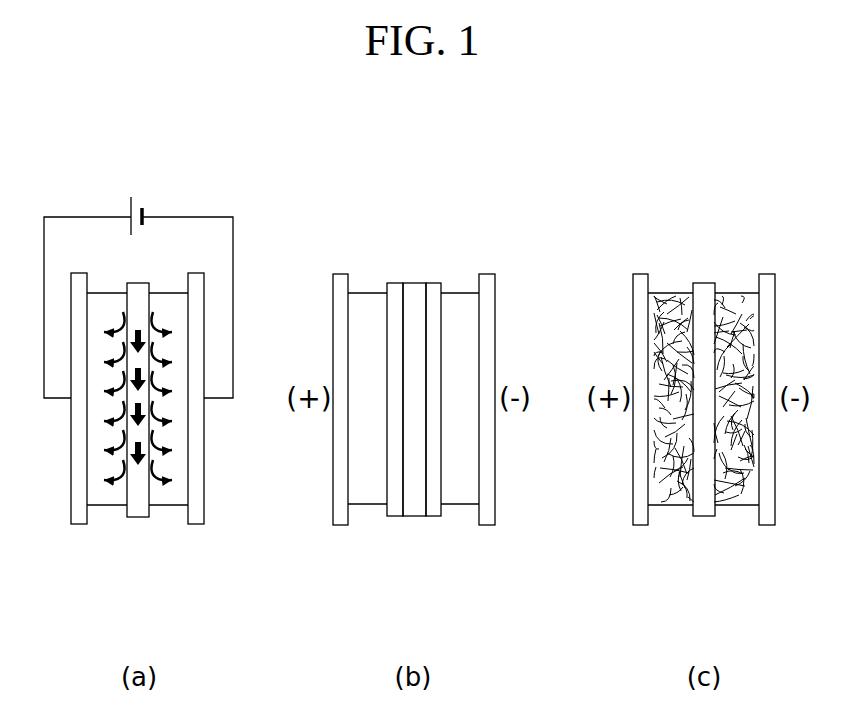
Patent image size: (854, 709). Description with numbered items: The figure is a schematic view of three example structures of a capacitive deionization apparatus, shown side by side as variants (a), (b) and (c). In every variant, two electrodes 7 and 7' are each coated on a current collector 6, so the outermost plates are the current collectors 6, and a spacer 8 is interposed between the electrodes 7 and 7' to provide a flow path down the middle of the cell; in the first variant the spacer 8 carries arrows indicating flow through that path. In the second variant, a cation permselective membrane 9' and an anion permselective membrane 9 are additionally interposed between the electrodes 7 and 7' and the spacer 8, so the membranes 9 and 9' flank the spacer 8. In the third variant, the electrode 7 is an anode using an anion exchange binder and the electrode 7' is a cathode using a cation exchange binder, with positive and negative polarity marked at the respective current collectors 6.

The current collector 6 is at (79, 524).
The electrode 7 is at (390, 446).
The electrode 7' is at (454, 446).
The spacer 8 is at (137, 517).
The anion permselective membrane 9 is at (395, 429).
The cation permselective membrane 9' is at (437, 429).